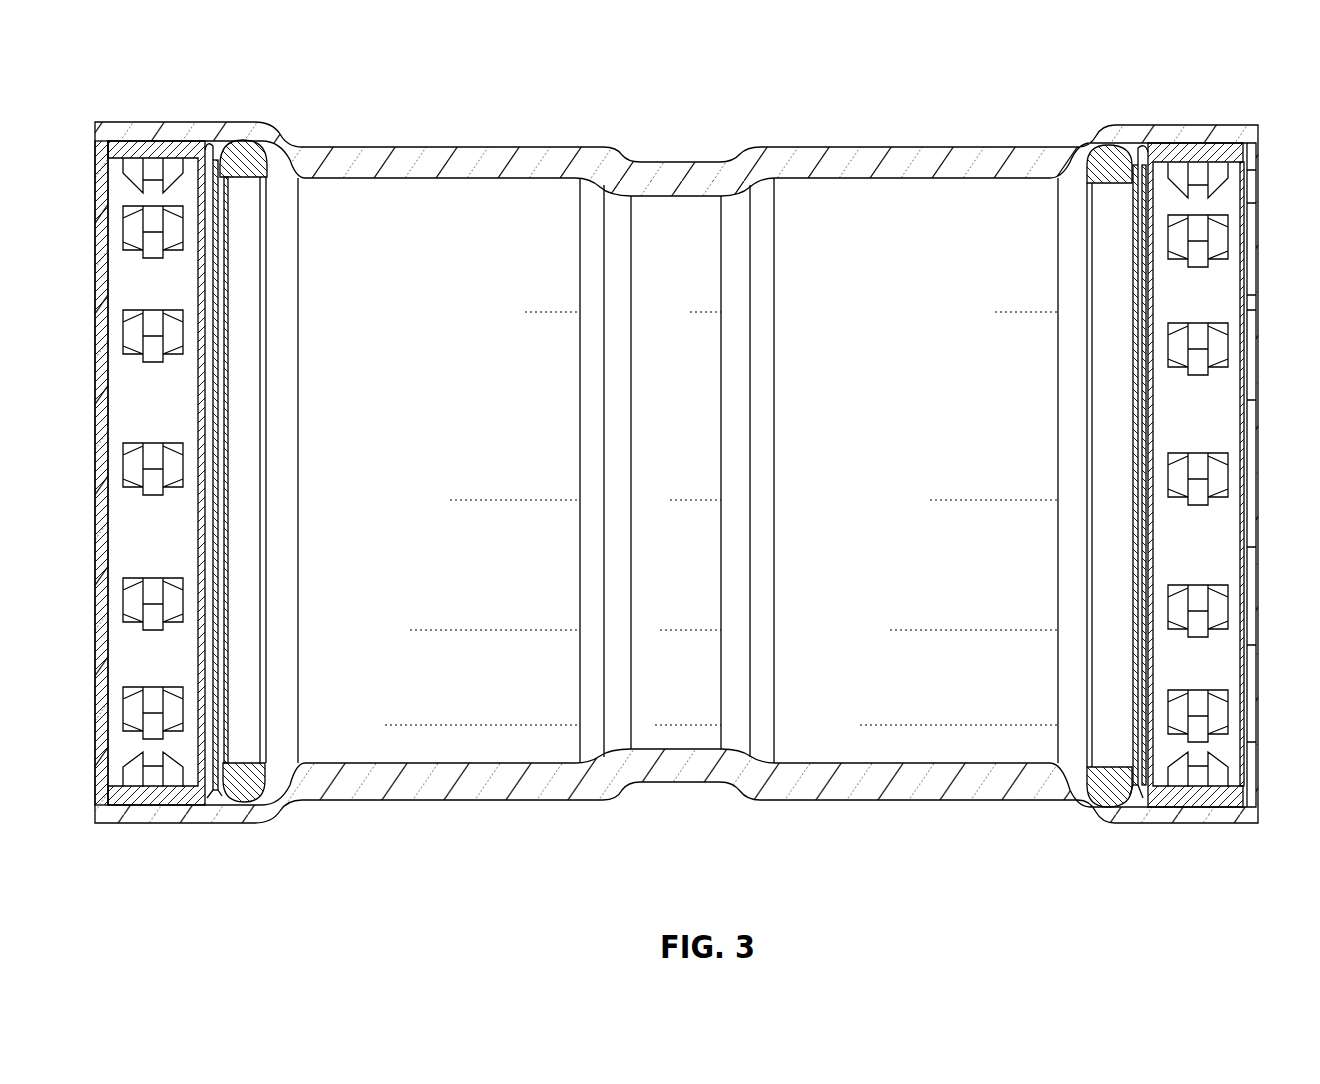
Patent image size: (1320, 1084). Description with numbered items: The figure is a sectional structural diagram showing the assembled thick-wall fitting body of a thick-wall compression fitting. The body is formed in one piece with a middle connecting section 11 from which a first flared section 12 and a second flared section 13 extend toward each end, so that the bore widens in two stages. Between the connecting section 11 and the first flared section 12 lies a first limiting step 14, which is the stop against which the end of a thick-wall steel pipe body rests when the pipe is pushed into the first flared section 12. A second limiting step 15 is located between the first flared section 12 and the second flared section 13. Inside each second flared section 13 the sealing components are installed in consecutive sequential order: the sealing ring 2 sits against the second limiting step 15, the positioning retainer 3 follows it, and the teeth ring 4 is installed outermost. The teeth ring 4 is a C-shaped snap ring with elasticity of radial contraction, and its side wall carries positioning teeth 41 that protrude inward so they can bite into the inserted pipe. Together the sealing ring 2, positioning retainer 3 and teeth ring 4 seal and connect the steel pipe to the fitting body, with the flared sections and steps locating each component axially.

The sealing ring 2 is at (1112, 148).
The positioning retainer 3 is at (1142, 473).
The teeth ring 4 is at (1158, 677).
The connecting section 11 is at (677, 160).
The first flared section 12 is at (440, 147).
The second flared section 13 is at (170, 120).
The first limiting step 14 is at (602, 150).
The second limiting step 15 is at (265, 140).
The positioning teeth 41 is at (1215, 348).